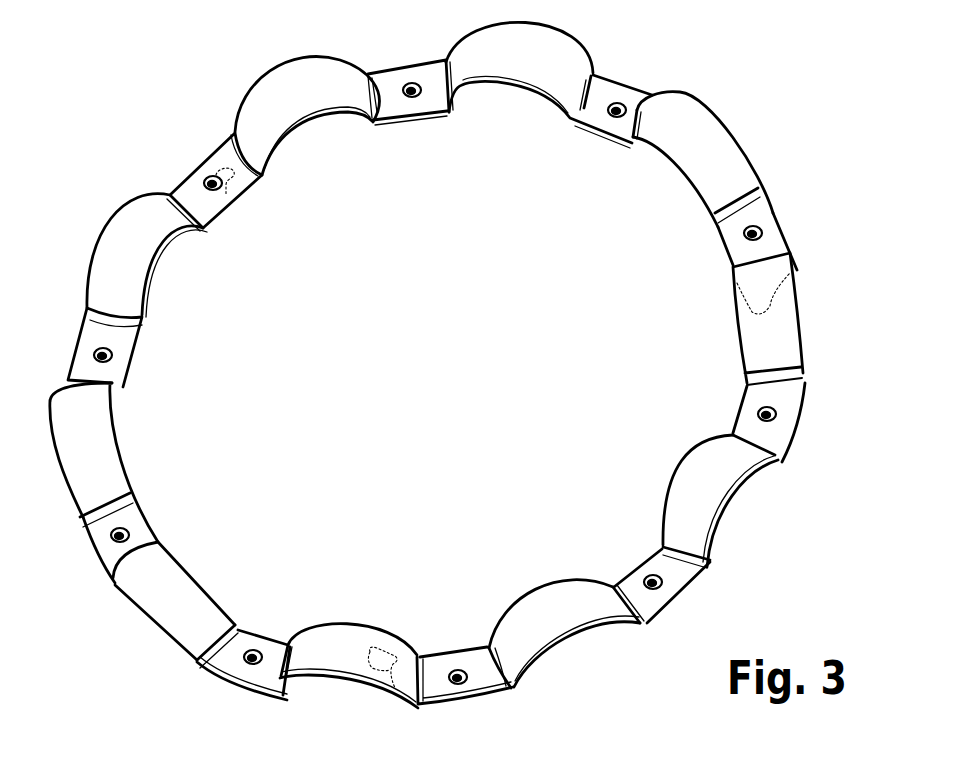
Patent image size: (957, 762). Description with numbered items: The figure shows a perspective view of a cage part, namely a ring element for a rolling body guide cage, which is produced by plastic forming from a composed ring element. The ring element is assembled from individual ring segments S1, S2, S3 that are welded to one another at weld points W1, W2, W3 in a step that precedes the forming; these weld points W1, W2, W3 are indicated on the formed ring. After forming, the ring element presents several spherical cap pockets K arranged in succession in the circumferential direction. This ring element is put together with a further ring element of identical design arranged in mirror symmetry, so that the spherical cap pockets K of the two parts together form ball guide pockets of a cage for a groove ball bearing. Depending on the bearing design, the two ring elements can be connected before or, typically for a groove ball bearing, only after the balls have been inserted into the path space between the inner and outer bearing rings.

The weld point W1 is at (190, 157).
The spherical cap pocket K is at (305, 100).
The ring segment S1 is at (558, 82).
The weld point W2 is at (715, 292).
The ring segment S2 is at (752, 397).
The ring segment S3 is at (127, 343).
The weld point W3 is at (420, 630).